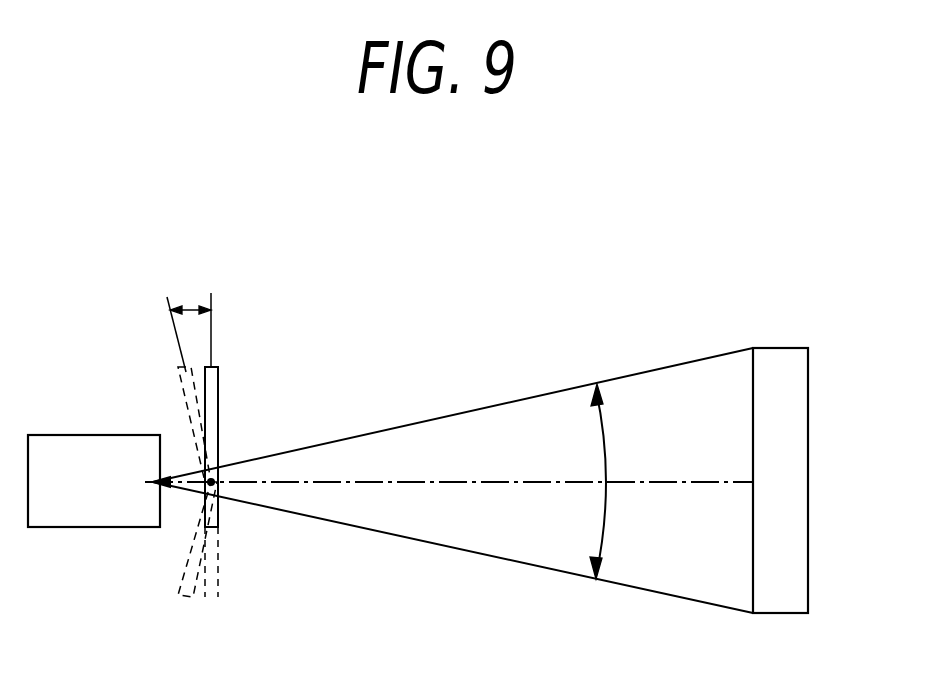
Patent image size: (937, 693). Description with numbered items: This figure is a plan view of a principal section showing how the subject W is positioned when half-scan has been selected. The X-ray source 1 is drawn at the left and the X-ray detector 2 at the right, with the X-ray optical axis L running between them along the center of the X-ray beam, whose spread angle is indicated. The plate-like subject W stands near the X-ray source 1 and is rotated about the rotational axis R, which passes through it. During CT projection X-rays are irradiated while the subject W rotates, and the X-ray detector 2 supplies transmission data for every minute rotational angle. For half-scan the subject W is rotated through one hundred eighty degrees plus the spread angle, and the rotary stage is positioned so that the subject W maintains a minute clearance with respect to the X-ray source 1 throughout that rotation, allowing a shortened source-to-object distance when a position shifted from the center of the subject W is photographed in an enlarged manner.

The X-ray source 1 is at (66, 514).
The X-ray detector 2 is at (775, 348).
The subject W is at (218, 404).
The rotational axis R is at (202, 489).
The X-ray optical axis L is at (558, 470).